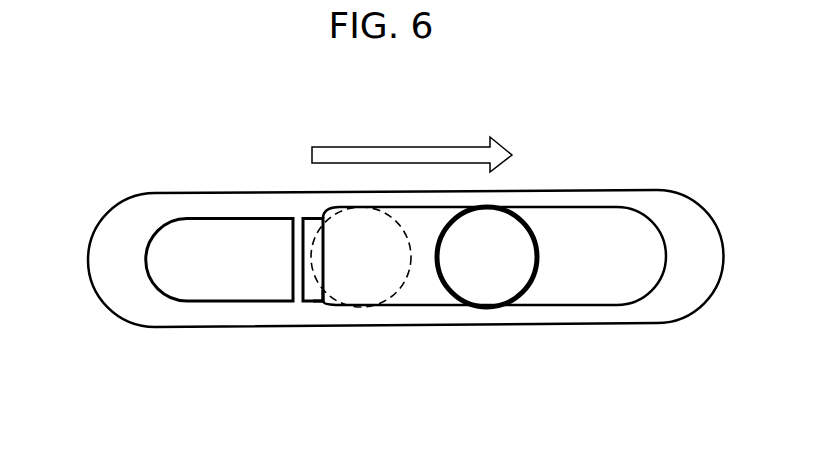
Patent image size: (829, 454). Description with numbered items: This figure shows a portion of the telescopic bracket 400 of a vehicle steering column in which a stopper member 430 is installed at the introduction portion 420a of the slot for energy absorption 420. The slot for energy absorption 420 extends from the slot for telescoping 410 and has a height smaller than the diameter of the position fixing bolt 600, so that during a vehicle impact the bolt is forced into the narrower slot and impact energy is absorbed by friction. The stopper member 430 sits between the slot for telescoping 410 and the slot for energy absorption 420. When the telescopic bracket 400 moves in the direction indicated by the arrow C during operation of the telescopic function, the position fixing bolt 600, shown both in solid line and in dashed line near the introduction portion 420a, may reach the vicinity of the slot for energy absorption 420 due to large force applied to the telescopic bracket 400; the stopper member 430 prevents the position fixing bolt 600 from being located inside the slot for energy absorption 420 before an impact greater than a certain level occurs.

The telescopic bracket 400 is at (652, 200).
The slot for telescoping 410 is at (614, 248).
The slot for energy absorption 420 is at (175, 253).
The introduction portion 420a is at (313, 304).
The stopper member 430 is at (300, 262).
The position fixing bolt 600 is at (402, 281).
The arrow indicating moving direction C is at (325, 146).